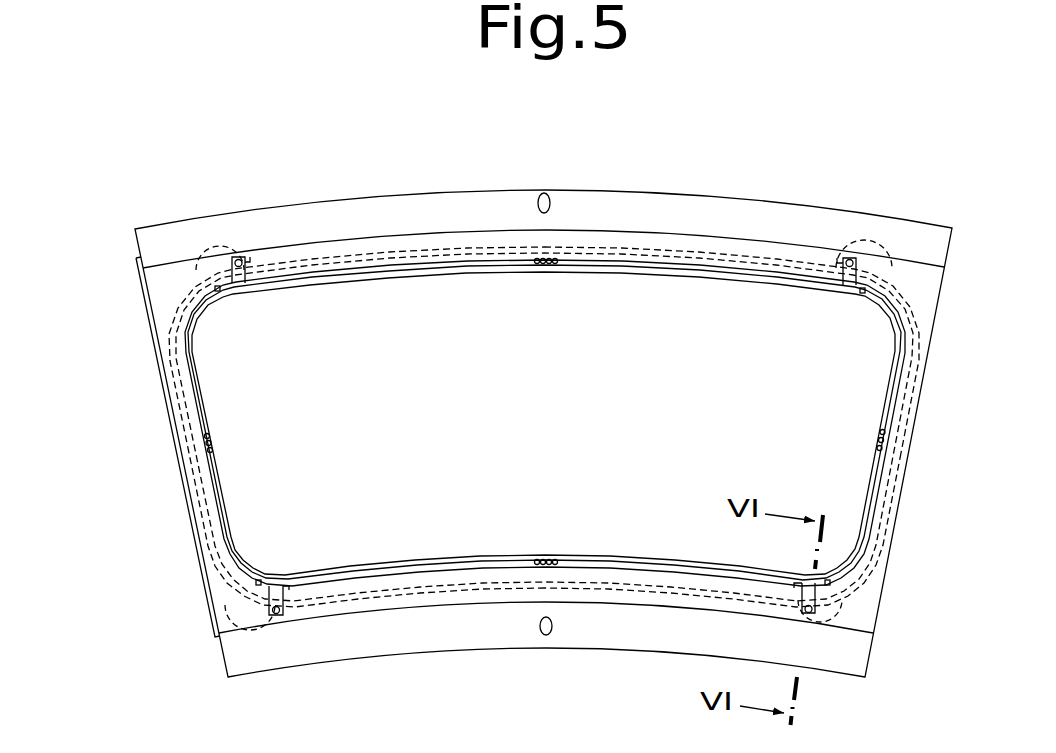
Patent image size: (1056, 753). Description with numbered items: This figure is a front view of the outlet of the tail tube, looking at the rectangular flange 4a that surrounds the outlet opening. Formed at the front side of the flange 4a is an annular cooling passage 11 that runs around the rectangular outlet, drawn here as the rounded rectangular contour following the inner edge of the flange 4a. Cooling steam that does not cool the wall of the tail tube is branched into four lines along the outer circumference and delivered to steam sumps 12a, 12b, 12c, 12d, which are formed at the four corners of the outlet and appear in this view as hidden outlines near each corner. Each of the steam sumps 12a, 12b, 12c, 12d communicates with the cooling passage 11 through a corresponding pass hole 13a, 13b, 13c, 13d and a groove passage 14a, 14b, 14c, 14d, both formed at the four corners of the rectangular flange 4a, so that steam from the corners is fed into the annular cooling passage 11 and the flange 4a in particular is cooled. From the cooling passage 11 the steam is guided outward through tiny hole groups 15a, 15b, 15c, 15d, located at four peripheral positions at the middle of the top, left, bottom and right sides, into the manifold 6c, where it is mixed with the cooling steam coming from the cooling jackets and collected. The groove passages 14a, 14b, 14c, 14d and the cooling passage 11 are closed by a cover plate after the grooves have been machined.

The flange 4a is at (743, 190).
The manifold 6c is at (633, 250).
The cooling passage 11 is at (388, 276).
The steam sump 12a is at (225, 248).
The steam sump 12b is at (232, 618).
The steam sump 12c is at (868, 625).
The steam sump 12d is at (870, 265).
The pass hole 13a is at (241, 257).
The pass hole 13b is at (282, 612).
The pass hole 13c is at (805, 609).
The pass hole 13d is at (849, 258).
The groove passage 14a is at (233, 265).
The groove passage 14b is at (268, 592).
The groove passage 14c is at (818, 595).
The groove passage 14d is at (860, 268).
The tiny hole group 15a is at (540, 254).
The tiny hole group 15b is at (203, 442).
The tiny hole group 15c is at (545, 568).
The tiny hole group 15d is at (888, 440).